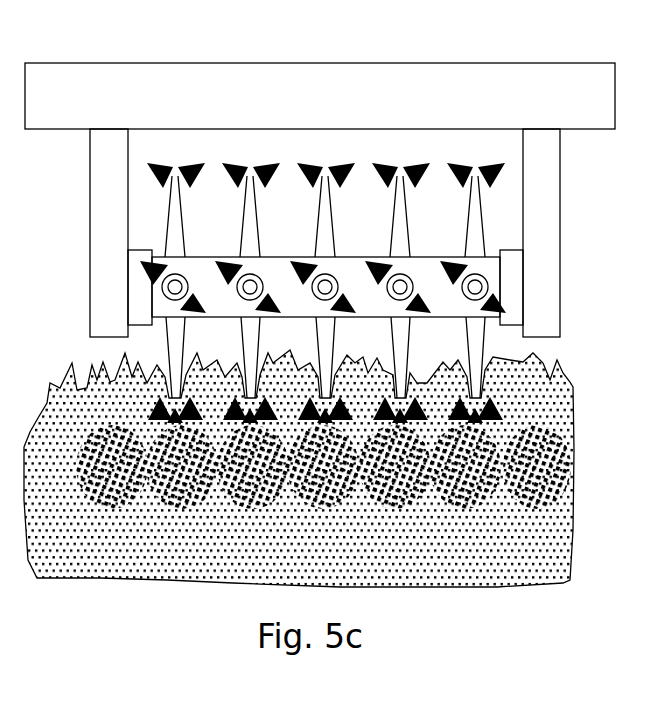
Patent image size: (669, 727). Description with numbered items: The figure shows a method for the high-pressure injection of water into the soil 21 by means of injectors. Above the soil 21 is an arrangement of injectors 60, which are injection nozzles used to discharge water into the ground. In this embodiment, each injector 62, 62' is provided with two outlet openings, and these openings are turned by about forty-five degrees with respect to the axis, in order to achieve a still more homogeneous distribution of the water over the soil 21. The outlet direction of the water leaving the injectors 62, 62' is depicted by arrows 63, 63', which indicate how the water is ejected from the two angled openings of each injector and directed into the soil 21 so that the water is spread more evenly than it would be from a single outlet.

The soil 21 is at (537, 523).
The injector 60 is at (474, 218).
The injector 62 is at (404, 357).
The injector 62' is at (390, 289).
The arrow 63 is at (391, 241).
The arrow 63' is at (323, 255).